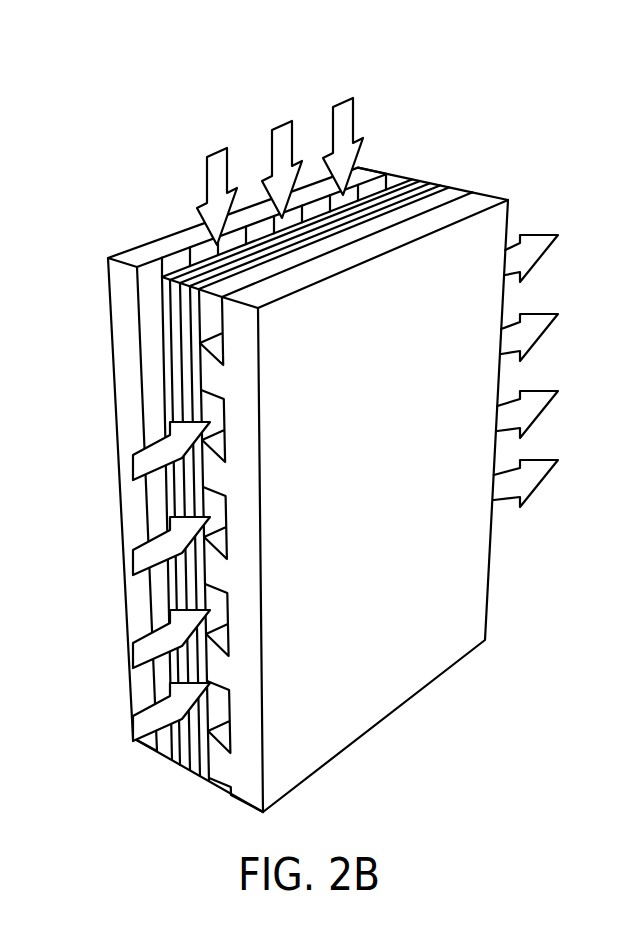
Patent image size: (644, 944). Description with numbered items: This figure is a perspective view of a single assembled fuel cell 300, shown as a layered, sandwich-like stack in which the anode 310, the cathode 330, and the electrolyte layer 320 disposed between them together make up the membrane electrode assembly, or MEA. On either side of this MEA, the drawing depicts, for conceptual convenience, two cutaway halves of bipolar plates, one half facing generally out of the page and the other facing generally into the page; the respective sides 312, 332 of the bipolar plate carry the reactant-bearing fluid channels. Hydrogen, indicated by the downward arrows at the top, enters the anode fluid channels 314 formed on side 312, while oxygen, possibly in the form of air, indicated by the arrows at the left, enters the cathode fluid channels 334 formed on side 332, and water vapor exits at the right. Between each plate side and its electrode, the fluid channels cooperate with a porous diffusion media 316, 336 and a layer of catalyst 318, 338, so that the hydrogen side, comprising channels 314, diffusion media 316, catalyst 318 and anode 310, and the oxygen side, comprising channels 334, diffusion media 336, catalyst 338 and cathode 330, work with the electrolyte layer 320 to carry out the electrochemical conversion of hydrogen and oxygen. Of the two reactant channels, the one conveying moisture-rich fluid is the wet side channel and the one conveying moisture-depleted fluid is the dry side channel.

The fuel cell 300 is at (318, 429).
The anode 310 is at (299, 429).
The side of the bipolar plate 312 is at (368, 175).
The anode fluid channels 314 is at (272, 152).
The porous diffusion media 316 is at (165, 310).
The layer of catalyst 318 is at (187, 330).
The electrolyte layer 320 is at (262, 465).
The cathode 330 is at (453, 192).
The side of the bipolar plate 332 is at (412, 176).
The cathode fluid channels 334 is at (210, 500).
The porous diffusion media 336 is at (192, 400).
The layer of catalyst 338 is at (200, 368).